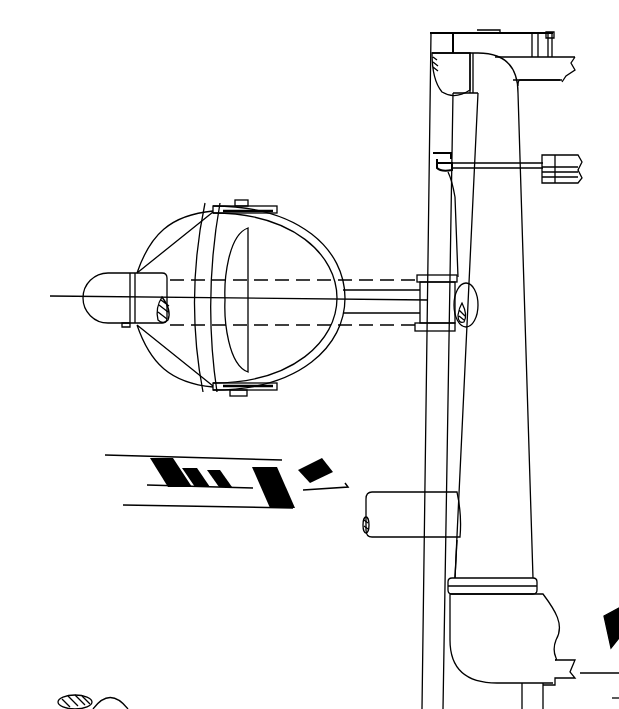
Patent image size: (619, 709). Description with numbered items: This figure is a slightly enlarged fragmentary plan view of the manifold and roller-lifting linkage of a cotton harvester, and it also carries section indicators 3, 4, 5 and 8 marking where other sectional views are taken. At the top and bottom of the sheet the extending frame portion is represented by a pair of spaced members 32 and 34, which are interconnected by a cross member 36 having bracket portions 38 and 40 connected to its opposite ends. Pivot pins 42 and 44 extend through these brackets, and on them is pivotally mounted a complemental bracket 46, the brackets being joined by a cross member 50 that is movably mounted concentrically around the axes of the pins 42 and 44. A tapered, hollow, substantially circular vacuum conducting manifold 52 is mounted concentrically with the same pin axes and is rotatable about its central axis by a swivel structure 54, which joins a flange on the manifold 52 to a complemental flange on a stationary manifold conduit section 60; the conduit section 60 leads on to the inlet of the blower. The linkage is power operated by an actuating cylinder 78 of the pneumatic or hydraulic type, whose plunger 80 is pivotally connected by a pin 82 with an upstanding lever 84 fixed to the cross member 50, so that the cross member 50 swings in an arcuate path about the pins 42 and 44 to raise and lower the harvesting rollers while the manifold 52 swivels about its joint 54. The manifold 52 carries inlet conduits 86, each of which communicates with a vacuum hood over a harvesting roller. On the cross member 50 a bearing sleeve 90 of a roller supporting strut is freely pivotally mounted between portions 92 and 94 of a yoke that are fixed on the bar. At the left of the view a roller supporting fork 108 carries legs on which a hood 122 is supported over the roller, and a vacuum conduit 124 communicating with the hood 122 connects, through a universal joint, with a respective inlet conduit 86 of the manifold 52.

The spaced member 32 is at (550, 32).
The spaced member 34 is at (577, 668).
The cross member 36 is at (532, 46).
The bracket portion 38 is at (551, 70).
The bracket portion 40 is at (592, 700).
The pivot pin 42 is at (557, 42).
The pivot pin 44 is at (547, 673).
The complemental bracket 46 is at (457, 33).
The cross member 50 is at (437, 142).
The vacuum conducting manifold 52 is at (510, 236).
The swivel structure 54 is at (487, 583).
The stationary manifold conduit section 60 is at (548, 595).
The actuating cylinder 78 is at (562, 157).
The plunger 80 is at (535, 167).
The pin 82 is at (453, 191).
The upstanding lever 84 is at (430, 158).
The inlet conduit 86 is at (447, 84).
The bearing sleeve 90 is at (468, 328).
The yoke portion 92 is at (427, 268).
The yoke portion 94 is at (440, 325).
The roller supporting fork 108 is at (303, 191).
The hood 122 is at (177, 335).
The vacuum conduit 124 is at (140, 310).
The section line 3- 3 is at (420, 180).
The section line 4- 4 is at (463, 213).
The section line 5- 5 is at (62, 292).
The section line 8- 8 is at (507, 575).